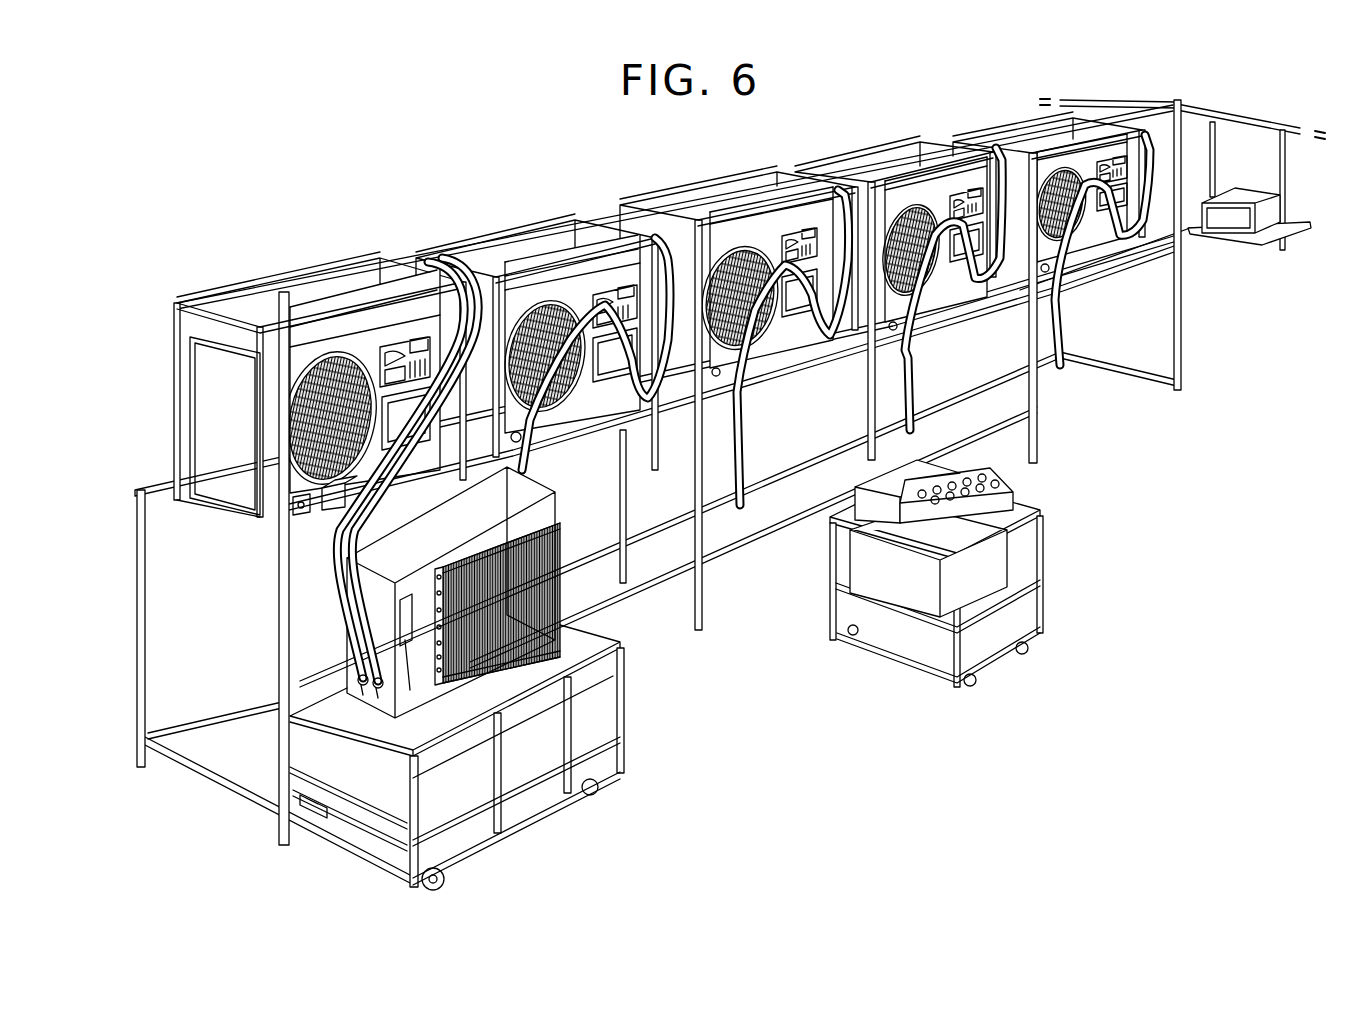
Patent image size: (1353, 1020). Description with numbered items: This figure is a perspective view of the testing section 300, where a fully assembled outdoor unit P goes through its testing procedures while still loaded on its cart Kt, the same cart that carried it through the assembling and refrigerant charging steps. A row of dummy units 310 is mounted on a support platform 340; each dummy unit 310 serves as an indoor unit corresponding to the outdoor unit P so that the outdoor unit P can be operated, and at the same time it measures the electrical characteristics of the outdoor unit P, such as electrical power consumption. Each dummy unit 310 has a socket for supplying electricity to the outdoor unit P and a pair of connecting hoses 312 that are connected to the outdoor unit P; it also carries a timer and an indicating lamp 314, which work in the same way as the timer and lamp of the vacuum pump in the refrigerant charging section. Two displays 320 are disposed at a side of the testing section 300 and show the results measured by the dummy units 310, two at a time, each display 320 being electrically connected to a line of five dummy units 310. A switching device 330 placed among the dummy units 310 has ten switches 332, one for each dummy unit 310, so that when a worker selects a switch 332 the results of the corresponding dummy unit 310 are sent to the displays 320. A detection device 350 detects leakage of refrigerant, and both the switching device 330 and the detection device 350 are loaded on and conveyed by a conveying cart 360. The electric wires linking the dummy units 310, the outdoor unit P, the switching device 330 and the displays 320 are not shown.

The testing section 300 is at (730, 483).
The dummy unit 310 is at (340, 318).
The connecting hoses 312 is at (470, 327).
The indicating lamp 314 is at (298, 507).
The display 320 is at (1237, 193).
The switching device 330 is at (980, 473).
The switches 332 is at (978, 488).
The support platform 340 is at (730, 491).
The detection device 350 is at (898, 592).
The conveying cart 360 is at (986, 558).
The outdoor unit P is at (600, 665).
The cart Kt is at (627, 746).